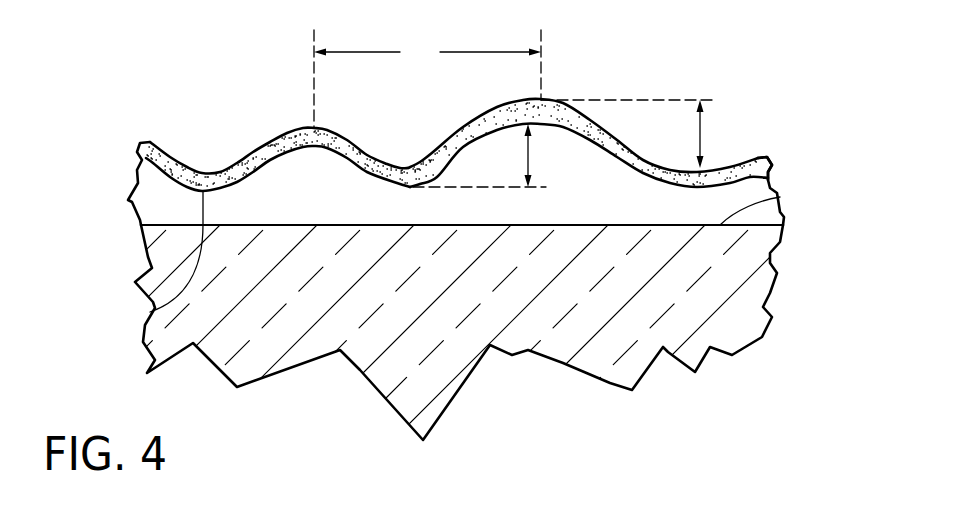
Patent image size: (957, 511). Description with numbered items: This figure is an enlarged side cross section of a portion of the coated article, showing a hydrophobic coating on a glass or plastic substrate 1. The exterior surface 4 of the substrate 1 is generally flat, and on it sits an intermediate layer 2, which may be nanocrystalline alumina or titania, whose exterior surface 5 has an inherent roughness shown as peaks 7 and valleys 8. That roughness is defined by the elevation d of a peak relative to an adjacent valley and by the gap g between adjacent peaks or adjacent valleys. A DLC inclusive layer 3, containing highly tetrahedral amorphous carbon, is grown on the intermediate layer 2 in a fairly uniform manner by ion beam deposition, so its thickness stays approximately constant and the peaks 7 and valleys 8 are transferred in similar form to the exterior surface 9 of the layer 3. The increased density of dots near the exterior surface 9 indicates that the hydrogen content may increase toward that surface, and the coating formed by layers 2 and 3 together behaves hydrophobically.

The substrate 1 is at (705, 297).
The intermediate layer 2 is at (152, 202).
The DLC inclusive layer 3 is at (257, 160).
The exterior surface of substrate 4 is at (780, 197).
The exterior surface of intermediate layer 5 is at (750, 160).
The peaks 7 is at (314, 128).
The valleys 8 is at (409, 167).
The exterior surface of DLC inclusive layer 9 is at (290, 128).